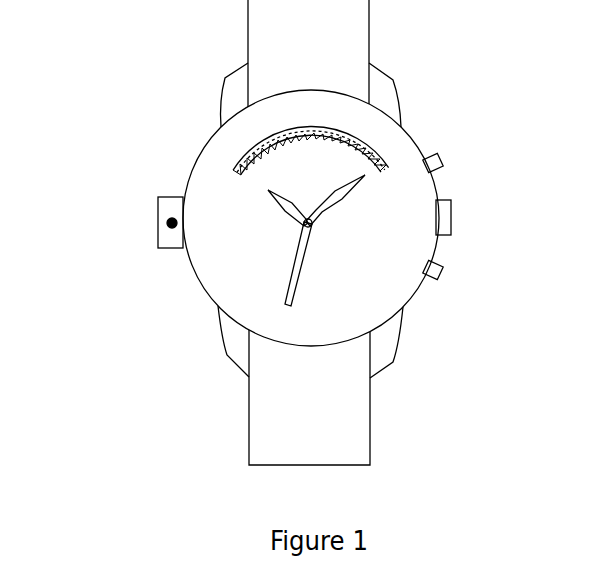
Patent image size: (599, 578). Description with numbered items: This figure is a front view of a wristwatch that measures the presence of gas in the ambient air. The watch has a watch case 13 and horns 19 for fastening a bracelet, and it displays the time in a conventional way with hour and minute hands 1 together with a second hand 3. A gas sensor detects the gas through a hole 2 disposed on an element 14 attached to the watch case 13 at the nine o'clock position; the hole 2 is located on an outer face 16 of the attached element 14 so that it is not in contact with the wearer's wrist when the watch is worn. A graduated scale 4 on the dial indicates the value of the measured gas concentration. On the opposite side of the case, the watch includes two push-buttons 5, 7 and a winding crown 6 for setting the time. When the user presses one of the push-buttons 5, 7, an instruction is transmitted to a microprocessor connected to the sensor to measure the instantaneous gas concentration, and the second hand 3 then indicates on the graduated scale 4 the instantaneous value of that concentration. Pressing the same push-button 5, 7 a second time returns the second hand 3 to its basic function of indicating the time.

The hour and minute hands 1 is at (312, 216).
The hole 2 is at (167, 222).
The second hand 3 is at (288, 295).
The graduated scale 4 is at (373, 157).
The push-button 5 is at (433, 168).
The winding crown 6 is at (450, 218).
The push-button 7 is at (433, 273).
The watch case 13 is at (210, 137).
The attached element 14 is at (158, 242).
The outer face 16 is at (103, 188).
The horns 19 is at (383, 88).